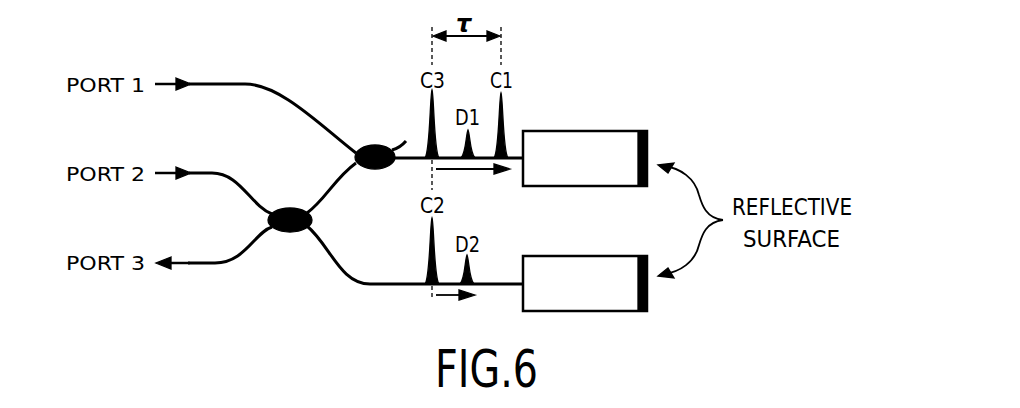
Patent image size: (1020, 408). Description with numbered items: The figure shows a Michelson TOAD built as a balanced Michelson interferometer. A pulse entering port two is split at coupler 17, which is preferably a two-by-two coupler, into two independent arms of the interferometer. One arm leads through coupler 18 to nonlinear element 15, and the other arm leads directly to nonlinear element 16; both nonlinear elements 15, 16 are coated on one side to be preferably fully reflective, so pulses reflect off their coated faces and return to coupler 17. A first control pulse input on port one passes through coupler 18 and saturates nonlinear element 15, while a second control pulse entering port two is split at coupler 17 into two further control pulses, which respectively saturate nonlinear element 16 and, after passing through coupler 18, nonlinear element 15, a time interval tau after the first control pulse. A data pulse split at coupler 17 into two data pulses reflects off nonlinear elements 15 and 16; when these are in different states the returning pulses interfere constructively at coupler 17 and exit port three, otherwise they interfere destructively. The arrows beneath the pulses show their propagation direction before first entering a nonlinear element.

The nonlinear element 15 is at (580, 131).
The nonlinear element 16 is at (581, 256).
The coupler 17 is at (288, 232).
The coupler 18 is at (375, 170).